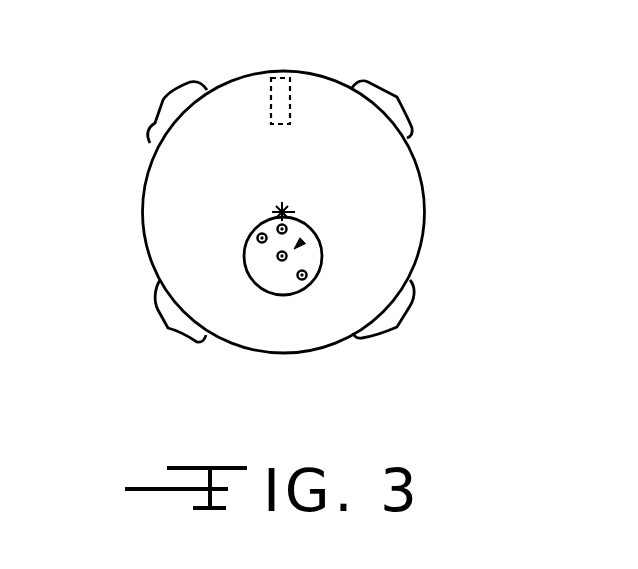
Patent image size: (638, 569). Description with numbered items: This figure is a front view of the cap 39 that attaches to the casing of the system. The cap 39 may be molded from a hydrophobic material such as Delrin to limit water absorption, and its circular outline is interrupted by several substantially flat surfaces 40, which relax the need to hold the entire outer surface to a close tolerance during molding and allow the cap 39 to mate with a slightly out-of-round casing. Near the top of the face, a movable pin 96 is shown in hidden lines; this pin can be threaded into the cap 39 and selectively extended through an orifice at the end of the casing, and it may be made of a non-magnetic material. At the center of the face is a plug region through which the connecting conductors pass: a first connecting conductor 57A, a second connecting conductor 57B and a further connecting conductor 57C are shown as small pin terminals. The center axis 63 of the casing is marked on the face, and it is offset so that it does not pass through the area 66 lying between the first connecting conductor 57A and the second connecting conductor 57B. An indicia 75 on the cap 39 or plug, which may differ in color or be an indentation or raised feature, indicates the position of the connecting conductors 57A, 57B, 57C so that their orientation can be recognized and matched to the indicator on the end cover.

The cap 39 is at (337, 82).
The substantially flat surfaces 40 is at (163, 100).
The movable pin 96 is at (281, 73).
The center axis 63 is at (283, 210).
The area 66 is at (298, 245).
The indicia 75 is at (268, 223).
The first connecting conductor 57A is at (258, 239).
The second connecting conductor 57B is at (279, 259).
The contact pin 57C is at (307, 274).